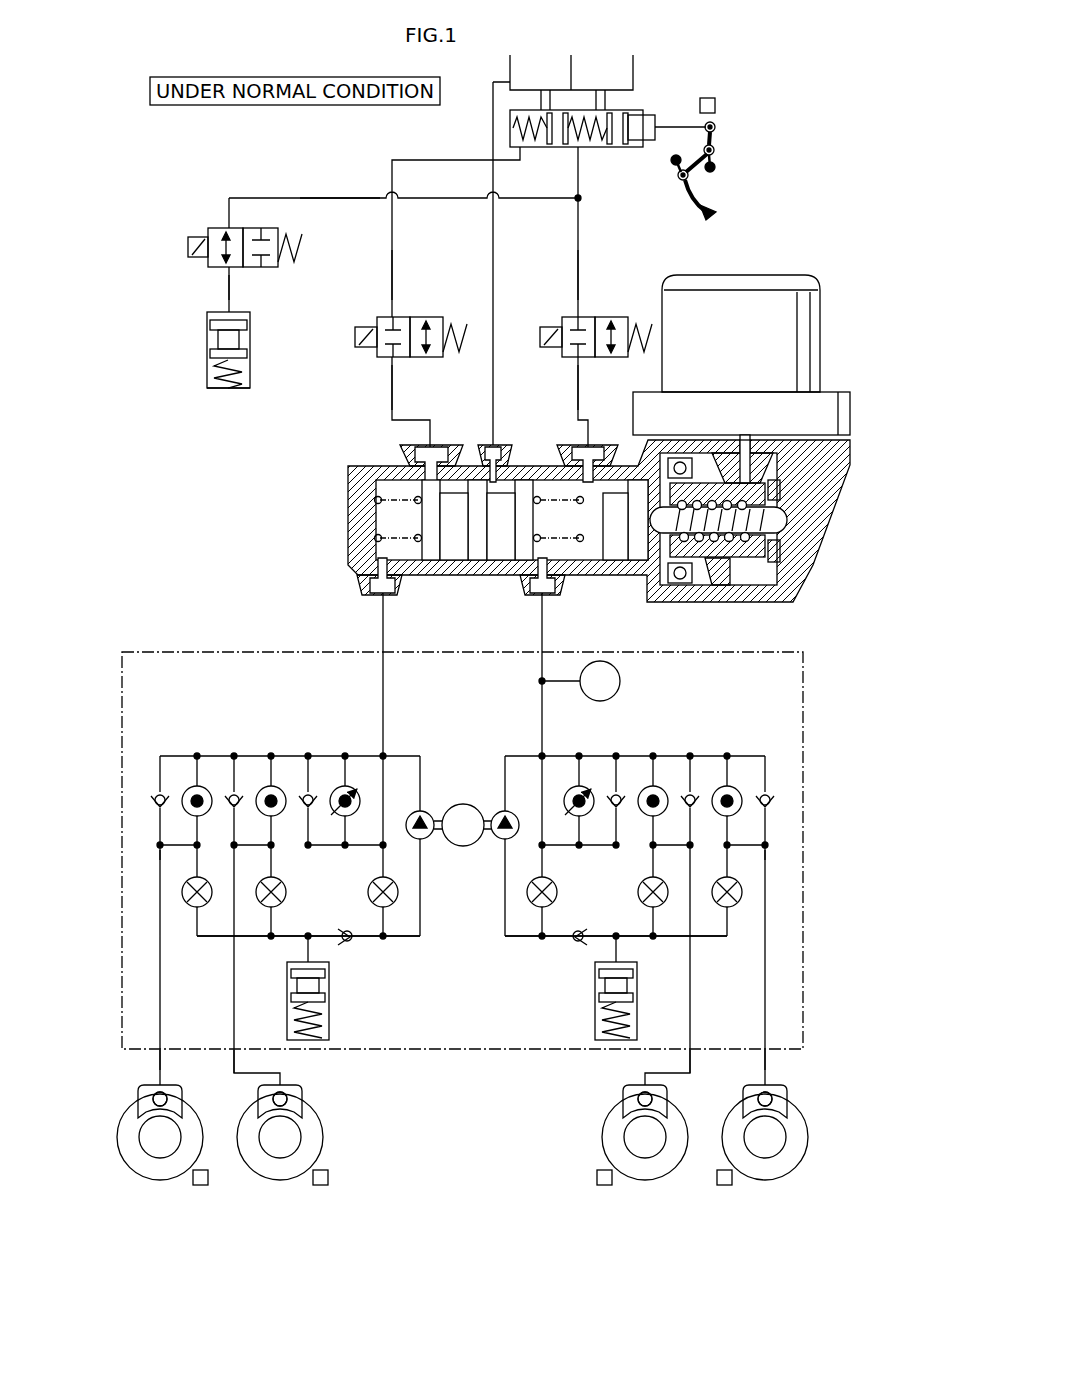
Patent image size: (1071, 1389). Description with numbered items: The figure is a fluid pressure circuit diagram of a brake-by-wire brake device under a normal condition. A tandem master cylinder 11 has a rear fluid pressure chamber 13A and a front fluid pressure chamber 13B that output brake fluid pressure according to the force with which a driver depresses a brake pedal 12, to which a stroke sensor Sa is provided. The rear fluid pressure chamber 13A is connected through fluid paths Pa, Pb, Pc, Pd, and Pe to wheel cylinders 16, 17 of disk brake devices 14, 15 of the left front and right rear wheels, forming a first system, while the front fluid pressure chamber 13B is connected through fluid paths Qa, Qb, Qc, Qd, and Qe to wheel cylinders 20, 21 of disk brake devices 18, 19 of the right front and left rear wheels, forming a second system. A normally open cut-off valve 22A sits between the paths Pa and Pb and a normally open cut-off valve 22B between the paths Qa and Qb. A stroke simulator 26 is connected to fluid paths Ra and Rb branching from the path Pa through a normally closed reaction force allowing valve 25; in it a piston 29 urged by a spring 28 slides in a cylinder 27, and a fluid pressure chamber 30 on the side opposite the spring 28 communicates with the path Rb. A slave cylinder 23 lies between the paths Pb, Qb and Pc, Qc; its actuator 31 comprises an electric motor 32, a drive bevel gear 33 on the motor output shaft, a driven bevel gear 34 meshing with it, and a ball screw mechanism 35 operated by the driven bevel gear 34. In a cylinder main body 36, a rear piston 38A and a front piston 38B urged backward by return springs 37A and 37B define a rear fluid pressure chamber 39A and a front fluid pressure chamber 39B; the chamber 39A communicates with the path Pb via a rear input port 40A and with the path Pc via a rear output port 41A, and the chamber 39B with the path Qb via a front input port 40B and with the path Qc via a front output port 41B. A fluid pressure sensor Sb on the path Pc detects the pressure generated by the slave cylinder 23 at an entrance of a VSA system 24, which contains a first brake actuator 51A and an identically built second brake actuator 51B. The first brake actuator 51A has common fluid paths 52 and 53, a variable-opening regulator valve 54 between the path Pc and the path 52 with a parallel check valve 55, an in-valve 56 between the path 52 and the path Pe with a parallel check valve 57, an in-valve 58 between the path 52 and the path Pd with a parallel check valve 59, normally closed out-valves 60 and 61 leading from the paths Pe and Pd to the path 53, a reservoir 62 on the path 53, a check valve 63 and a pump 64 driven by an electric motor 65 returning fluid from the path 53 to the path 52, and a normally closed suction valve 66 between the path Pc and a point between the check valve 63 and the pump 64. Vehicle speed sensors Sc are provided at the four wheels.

The tandem master cylinder 11 is at (608, 124).
The brake pedal 12 is at (718, 210).
The rear fluid pressure chamber 13A is at (590, 140).
The front fluid pressure chamber 13B is at (532, 138).
The disk brake device 14 is at (611, 1130).
The disk brake device 15 is at (792, 1139).
The wheel cylinder 16 is at (638, 1095).
The wheel cylinder 17 is at (772, 1095).
The disk brake device 18 is at (308, 1128).
The disk brake device 19 is at (136, 1138).
The wheel cylinder 20 is at (287, 1095).
The wheel cylinder 21 is at (153, 1095).
The cut-off valve 22A is at (590, 313).
The cut-off valve 22B is at (400, 314).
The slave cylinder 23 is at (346, 464).
The VSA system 24 is at (198, 650).
The reaction force allowing valve 25 is at (226, 226).
The stroke simulator 26 is at (252, 357).
The cylinder 27 is at (250, 362).
The spring 28 is at (238, 386).
The piston 29 is at (228, 335).
The fluid pressure chamber 30 is at (243, 318).
The actuator 31 is at (772, 596).
The electric motor 32 is at (805, 320).
The drive bevel gear 33 is at (750, 456).
The driven bevel gear 34 is at (758, 578).
The ball screw mechanism 35 is at (698, 560).
The cylinder main body 36 is at (497, 452).
The return spring 37A is at (530, 540).
The return spring 37B is at (380, 541).
The rear piston 38A is at (614, 540).
The front piston 38B is at (452, 520).
The rear fluid pressure chamber 39A is at (560, 490).
The front fluid pressure chamber 39B is at (395, 520).
The rear input port 40A is at (582, 446).
The front input port 40B is at (418, 446).
The rear output port 41A is at (538, 596).
The front output port 41B is at (380, 596).
The first brake actuator 51A is at (778, 910).
The second brake actuator 51B is at (148, 910).
The fluid path 52 is at (228, 755).
The fluid path 53 is at (220, 938).
The regulator valve 54 is at (340, 786).
The check valve 55 is at (305, 793).
The in-valve 56 is at (190, 788).
The check valve 57 is at (156, 795).
The in-valve 58 is at (267, 786).
The check valve 59 is at (230, 793).
The out-valve 60 is at (195, 908).
The out-valve 61 is at (286, 896).
The reservoir 62 is at (330, 1006).
The check valve 63 is at (350, 942).
The pump 64 is at (424, 840).
The electric motor 65 is at (462, 804).
The suction valve 66 is at (370, 884).
The stroke sensor Sa is at (716, 107).
The fluid pressure sensor Sb is at (622, 681).
The vehicle speed sensor Sc is at (205, 1186).
The fluid path Ra is at (332, 198).
The fluid path Rb is at (229, 290).
The fluid path Pa is at (576, 294).
The fluid path Pb is at (579, 400).
The fluid path Pc is at (542, 622).
The fluid path Pd is at (692, 1062).
The fluid path Pe is at (768, 1062).
The fluid path Qa is at (392, 282).
The fluid path Qb is at (392, 378).
The fluid path Qc is at (383, 622).
The fluid path Qd is at (233, 1062).
The fluid path Qe is at (158, 1062).